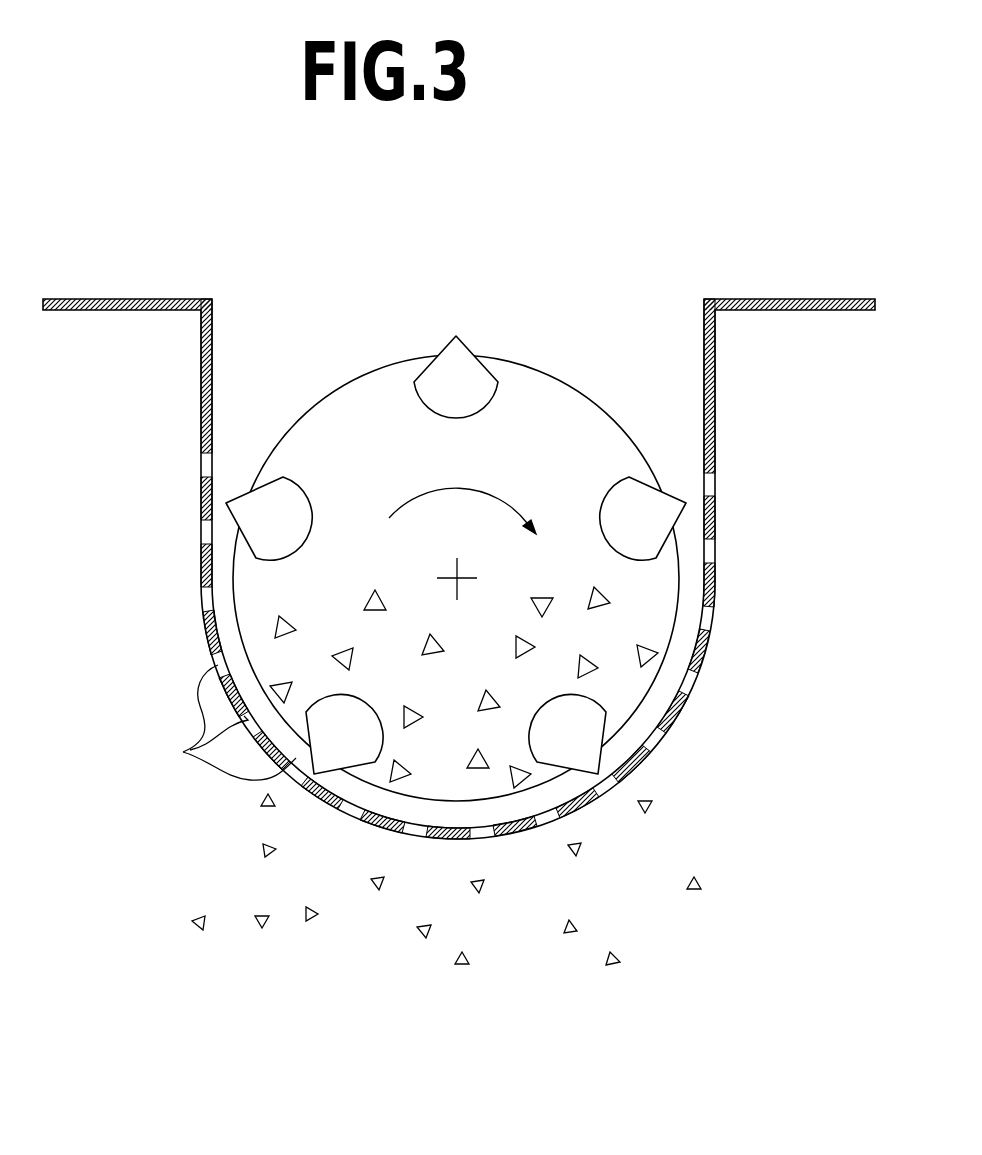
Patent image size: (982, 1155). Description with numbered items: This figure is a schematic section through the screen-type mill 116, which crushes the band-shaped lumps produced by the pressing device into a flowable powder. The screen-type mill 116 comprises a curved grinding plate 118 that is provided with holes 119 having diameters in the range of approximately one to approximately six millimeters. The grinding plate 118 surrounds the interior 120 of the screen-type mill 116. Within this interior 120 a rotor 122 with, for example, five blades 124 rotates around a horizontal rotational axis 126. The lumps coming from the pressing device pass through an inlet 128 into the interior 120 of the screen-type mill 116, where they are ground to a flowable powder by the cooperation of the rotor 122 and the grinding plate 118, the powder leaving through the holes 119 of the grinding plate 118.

The screen-type mill 116 is at (150, 288).
The grinding plate 118 is at (200, 394).
The holes 119 is at (415, 815).
The interior 120 is at (677, 380).
The rotor 122 is at (328, 413).
The blades 124 is at (452, 362).
The rotational axis 126 is at (447, 578).
The inlet 128 is at (545, 330).